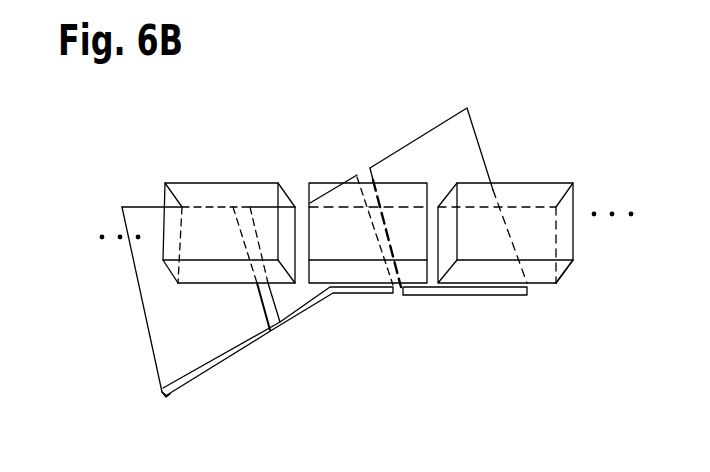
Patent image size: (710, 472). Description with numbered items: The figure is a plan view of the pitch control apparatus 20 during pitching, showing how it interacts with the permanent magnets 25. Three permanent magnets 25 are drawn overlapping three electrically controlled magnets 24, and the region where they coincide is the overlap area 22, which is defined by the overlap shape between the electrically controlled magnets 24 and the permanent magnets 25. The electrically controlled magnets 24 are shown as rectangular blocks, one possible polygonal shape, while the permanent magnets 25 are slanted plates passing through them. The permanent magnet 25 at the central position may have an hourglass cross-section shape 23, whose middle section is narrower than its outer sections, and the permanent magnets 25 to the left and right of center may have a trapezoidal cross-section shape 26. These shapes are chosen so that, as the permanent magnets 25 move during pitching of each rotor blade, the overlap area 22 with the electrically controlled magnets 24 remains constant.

The pitch control apparatus 20 is at (320, 138).
The overlap area 22 is at (214, 283).
The hourglass cross-section shape 23 is at (254, 360).
The electrically controlled magnet 24 is at (533, 233).
The permanent magnet 25 is at (137, 215).
The trapezoidal cross-section shape 26 is at (177, 392).